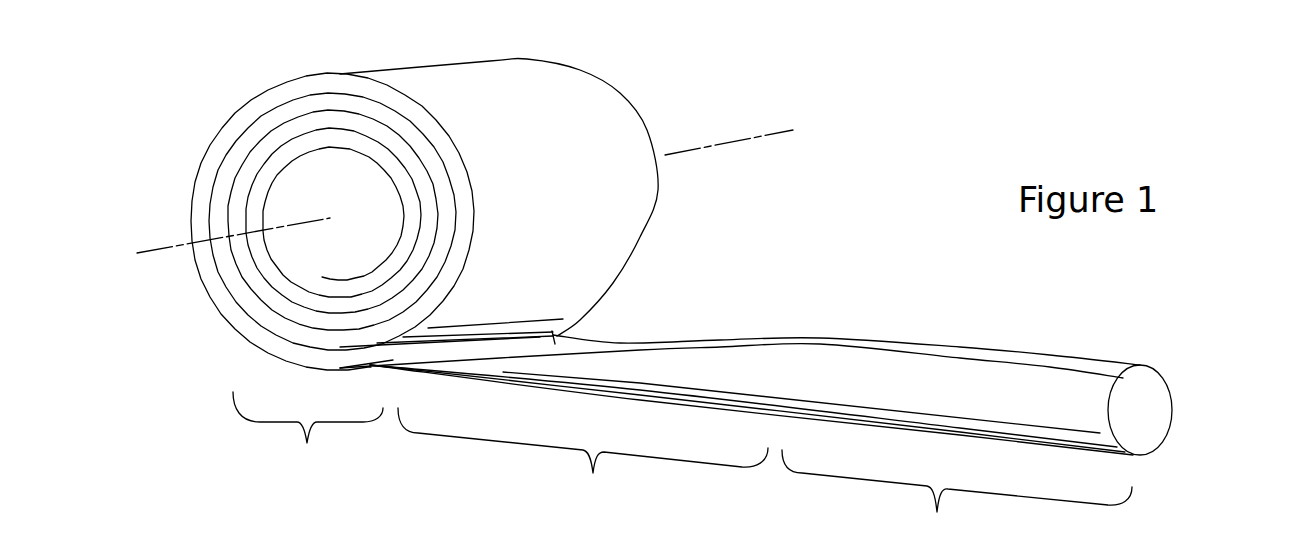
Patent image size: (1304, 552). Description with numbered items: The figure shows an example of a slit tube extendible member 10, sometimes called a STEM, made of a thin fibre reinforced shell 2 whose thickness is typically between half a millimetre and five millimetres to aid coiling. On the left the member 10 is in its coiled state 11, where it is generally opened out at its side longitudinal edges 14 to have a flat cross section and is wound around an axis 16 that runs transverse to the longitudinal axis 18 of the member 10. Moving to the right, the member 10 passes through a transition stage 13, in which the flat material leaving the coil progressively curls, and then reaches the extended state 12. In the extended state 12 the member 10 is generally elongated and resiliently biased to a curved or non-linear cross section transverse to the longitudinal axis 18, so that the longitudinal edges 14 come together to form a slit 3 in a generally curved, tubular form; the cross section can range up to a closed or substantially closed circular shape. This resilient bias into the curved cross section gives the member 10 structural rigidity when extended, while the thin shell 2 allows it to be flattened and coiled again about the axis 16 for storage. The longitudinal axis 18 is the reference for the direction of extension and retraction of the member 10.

The fibre reinforced shell 2 is at (529, 55).
The slit 3 is at (1019, 333).
The extendible member 10 is at (735, 78).
The coiled state 11 is at (308, 437).
The extended state 12 is at (957, 500).
The transition stage 13 is at (583, 460).
The longitudinal edges 14 is at (727, 338).
The coiling axis 16 is at (162, 248).
The longitudinal axis 18 is at (563, 335).